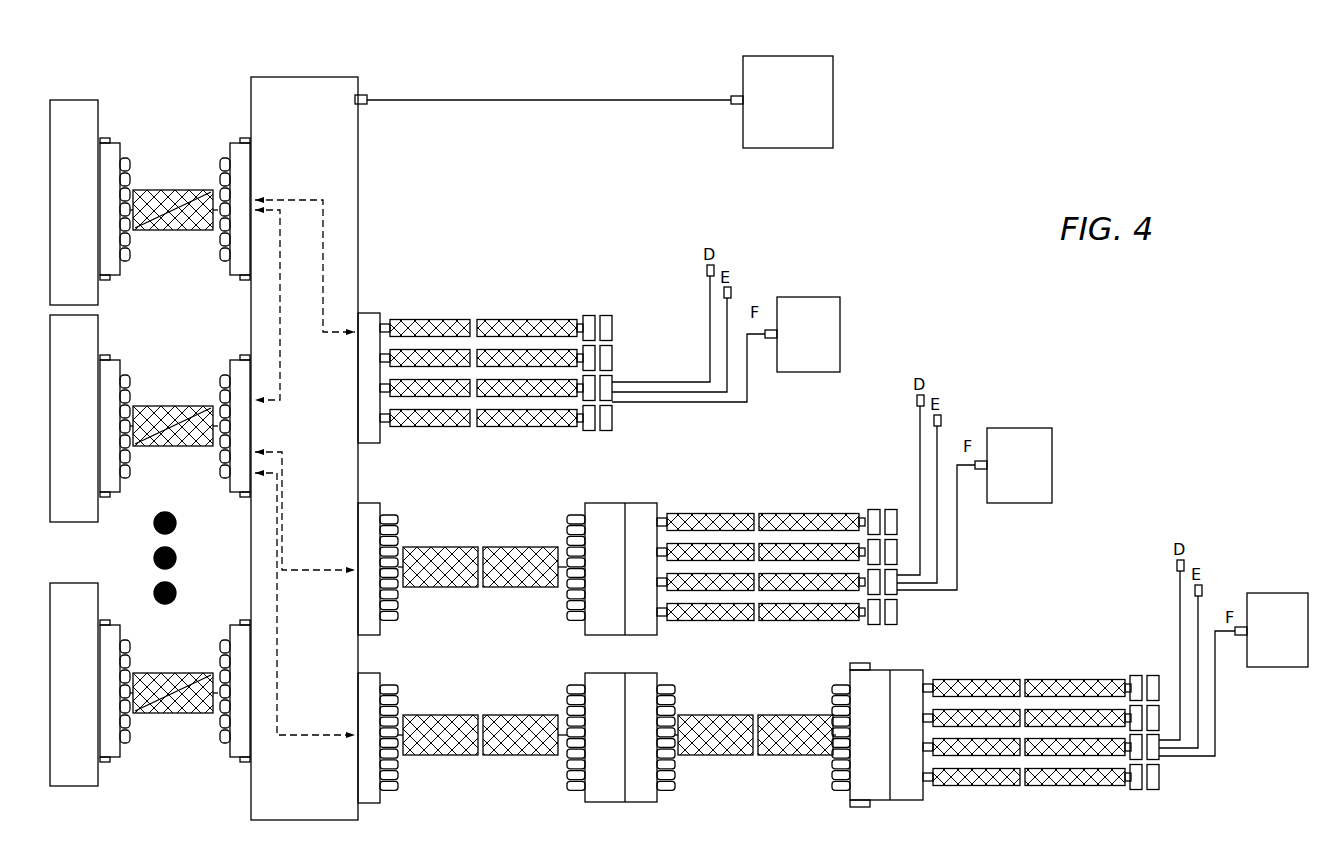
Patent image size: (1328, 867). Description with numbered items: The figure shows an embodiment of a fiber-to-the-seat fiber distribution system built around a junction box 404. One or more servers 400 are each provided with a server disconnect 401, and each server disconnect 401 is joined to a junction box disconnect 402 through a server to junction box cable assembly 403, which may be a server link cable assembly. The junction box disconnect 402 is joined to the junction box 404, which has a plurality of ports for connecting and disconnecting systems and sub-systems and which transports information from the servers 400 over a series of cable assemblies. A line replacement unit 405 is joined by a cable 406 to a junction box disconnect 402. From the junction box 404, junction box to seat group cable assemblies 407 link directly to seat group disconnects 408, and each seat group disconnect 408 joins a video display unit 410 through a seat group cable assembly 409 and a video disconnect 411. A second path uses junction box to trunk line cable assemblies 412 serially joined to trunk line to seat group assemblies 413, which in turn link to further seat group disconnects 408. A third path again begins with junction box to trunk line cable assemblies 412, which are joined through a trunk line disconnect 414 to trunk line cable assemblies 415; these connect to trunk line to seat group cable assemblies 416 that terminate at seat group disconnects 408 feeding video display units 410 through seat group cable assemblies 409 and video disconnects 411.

The server 400 is at (73, 100).
The server disconnect 401 is at (105, 134).
The junction box disconnect 402 is at (365, 100).
The server to junction box cable assembly 403 is at (230, 130).
The junction box 404 is at (358, 198).
The line replacement unit 405 is at (788, 56).
The cable 406 is at (551, 99).
The junction box to seat group cable assembly 407 is at (598, 295).
The seat group disconnect 408 is at (621, 352).
The seat group cable assembly 409 is at (778, 228).
The video display unit 410 is at (840, 320).
The video disconnect 411 is at (772, 318).
The junction box to trunk line cable assembly 412 is at (367, 480).
The trunk line to seat group assembly 413 is at (636, 493).
The trunk line disconnect 414 is at (620, 668).
The trunk line cable assembly 415 is at (636, 657).
The trunk line to seat group cable assembly 416 is at (893, 657).